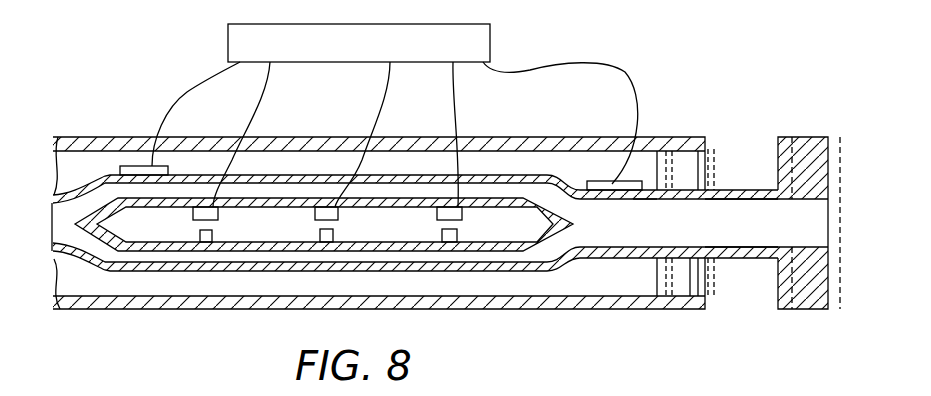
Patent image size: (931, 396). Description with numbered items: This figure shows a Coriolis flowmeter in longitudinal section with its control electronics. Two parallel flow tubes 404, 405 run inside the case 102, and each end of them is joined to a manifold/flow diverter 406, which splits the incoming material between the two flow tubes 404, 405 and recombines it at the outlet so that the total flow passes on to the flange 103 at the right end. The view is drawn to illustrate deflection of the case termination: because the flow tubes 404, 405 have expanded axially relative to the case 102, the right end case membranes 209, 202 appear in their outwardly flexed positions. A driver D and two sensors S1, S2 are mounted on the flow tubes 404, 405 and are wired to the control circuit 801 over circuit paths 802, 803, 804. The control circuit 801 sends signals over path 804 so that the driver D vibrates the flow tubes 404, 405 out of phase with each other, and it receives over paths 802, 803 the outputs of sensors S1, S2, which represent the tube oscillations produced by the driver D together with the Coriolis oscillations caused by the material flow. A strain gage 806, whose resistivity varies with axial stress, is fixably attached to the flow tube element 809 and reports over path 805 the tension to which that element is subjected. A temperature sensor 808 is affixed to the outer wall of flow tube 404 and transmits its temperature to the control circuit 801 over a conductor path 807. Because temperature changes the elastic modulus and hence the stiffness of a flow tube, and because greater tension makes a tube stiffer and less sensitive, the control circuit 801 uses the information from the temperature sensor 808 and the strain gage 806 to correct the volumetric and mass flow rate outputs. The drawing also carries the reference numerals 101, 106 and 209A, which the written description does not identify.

The outer tube 101 is at (122, 310).
The case 102 is at (569, 134).
The flange 103 is at (808, 137).
The connector 106 is at (803, 222).
The right end case membrane 202 is at (692, 277).
The right end case membrane 209 is at (657, 270).
The O-ring 209A is at (715, 168).
The flow tube 404 is at (245, 192).
The flow tube 405 is at (272, 260).
The manifold/flow diverter 406 is at (100, 190).
The control circuit 801 is at (228, 43).
The circuit path 802 is at (266, 82).
The circuit path 803 is at (455, 83).
The circuit path 804 is at (412, 92).
The path 805 is at (545, 65).
The strain gage 806 is at (605, 188).
The conductor path 807 is at (186, 90).
The temperature sensor 808 is at (130, 172).
The flow tube element 809 is at (633, 199).
The sensor S1 is at (207, 207).
The sensor S2 is at (447, 207).
The driver D is at (323, 207).